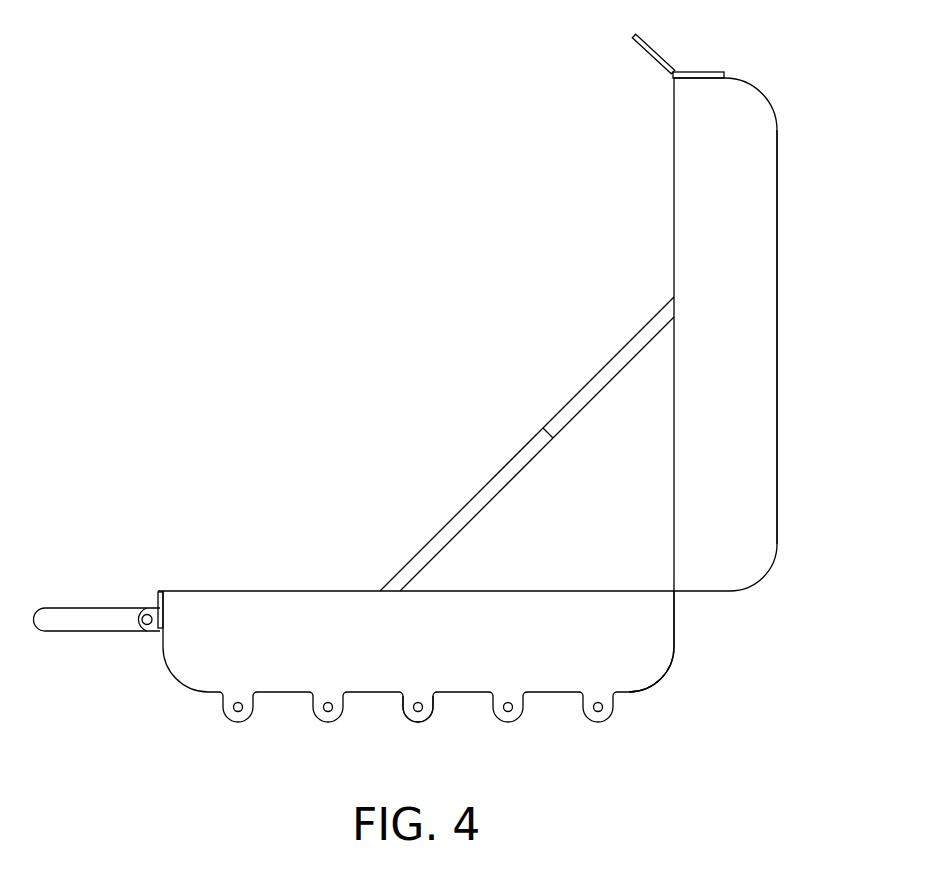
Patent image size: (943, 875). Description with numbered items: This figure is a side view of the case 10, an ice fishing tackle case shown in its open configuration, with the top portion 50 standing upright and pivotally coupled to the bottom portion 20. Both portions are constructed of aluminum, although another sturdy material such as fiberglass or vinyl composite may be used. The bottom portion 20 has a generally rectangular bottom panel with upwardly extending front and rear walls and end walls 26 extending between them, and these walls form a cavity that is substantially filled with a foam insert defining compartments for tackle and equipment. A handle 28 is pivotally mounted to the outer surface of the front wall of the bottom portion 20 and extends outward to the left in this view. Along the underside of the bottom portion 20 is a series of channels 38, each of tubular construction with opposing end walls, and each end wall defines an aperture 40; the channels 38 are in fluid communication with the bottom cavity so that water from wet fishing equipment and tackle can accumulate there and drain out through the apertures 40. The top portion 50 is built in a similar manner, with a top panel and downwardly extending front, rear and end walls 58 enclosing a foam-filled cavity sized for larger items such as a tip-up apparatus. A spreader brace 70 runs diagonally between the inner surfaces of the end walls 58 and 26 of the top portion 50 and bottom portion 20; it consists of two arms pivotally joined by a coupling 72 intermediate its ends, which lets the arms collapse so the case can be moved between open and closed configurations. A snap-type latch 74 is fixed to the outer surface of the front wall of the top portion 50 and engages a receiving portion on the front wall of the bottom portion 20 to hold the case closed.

The case 10 is at (186, 177).
The bottom portion 20 is at (160, 698).
The end walls 26 is at (662, 632).
The handle 28 is at (63, 608).
The channels 38 is at (433, 703).
The aperture 40 is at (410, 715).
The top portion 50 is at (796, 97).
The end walls 58 is at (777, 195).
The spreader braces 70 is at (607, 363).
The coupling 72 is at (515, 453).
The snap-type latches 74 is at (658, 57).